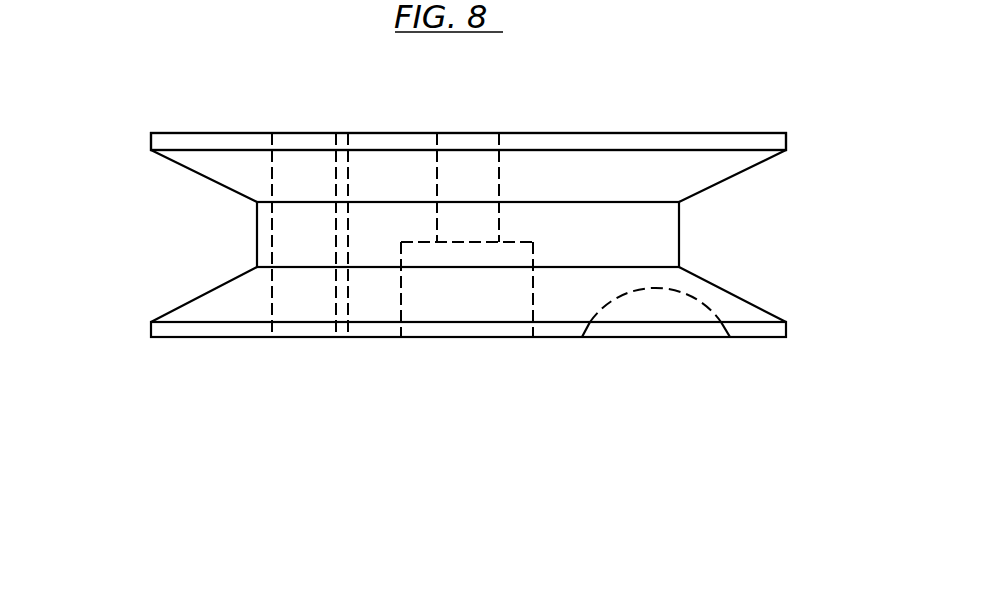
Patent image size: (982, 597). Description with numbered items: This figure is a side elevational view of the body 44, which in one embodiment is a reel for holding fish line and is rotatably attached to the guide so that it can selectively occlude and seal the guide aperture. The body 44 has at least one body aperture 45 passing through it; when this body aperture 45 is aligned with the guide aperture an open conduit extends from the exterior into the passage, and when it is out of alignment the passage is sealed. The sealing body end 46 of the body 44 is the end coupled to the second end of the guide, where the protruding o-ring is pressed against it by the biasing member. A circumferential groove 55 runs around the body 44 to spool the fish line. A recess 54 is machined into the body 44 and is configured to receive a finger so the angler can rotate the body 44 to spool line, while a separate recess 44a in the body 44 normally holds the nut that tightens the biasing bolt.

The body 44 is at (187, 300).
The recess 44a is at (457, 305).
The body aperture 45 is at (287, 240).
The sealing body end 46 is at (402, 133).
The recess 54 is at (645, 318).
The circumferential groove 55 is at (663, 233).